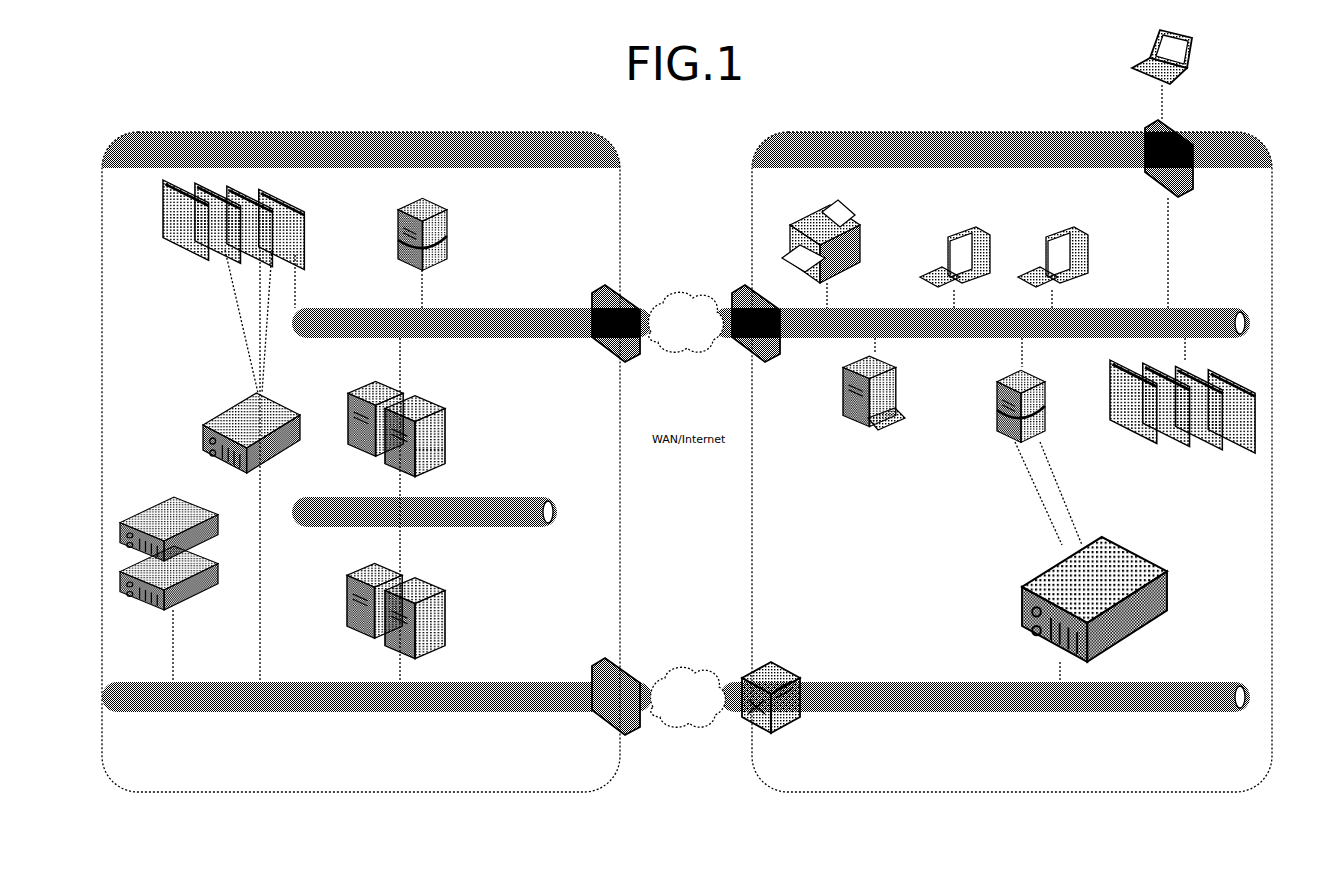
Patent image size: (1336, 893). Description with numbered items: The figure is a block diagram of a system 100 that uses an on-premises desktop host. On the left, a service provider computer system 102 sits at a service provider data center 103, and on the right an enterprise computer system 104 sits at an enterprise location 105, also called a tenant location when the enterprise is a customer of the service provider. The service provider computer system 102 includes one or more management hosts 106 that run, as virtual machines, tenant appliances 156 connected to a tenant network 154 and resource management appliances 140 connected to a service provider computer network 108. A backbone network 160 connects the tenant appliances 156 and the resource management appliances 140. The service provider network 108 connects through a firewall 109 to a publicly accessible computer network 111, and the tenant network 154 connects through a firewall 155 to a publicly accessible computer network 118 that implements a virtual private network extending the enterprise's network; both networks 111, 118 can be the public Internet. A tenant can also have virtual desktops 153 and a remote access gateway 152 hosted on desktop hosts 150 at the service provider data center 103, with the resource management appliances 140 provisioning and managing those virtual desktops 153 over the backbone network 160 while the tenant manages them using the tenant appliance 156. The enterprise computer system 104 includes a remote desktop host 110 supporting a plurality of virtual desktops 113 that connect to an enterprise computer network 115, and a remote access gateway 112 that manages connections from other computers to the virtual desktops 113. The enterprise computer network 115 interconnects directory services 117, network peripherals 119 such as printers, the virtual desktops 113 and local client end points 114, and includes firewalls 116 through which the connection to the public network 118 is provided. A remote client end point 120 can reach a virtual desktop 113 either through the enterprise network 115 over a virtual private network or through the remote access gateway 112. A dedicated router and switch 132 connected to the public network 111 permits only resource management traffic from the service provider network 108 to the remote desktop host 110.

The system 100 is at (770, 97).
The service provider computer system 102 is at (361, 462).
The service provider data center 103 is at (328, 152).
The enterprise computer system 104 is at (1012, 462).
The enterprise location 105 is at (985, 152).
The management hosts 106 is at (122, 472).
The service provider computer network 108 is at (285, 682).
The firewall 109 is at (625, 662).
The remote desktop host 110 is at (1140, 567).
The publicly accessible computer network 111 is at (690, 670).
The remote access gateway 112 is at (1047, 402).
The virtual desktops 113 is at (1225, 372).
The local client end points 114 is at (1065, 227).
The enterprise computer network 115 is at (1198, 308).
The firewalls 116 is at (768, 310).
The directory services 117 is at (903, 392).
The publicly accessible computer network 118 is at (690, 300).
The network peripherals 119 is at (860, 250).
The remote client end point 120 is at (1172, 48).
The router and switch 132 is at (786, 665).
The resource management appliances 140 is at (445, 577).
The desktop hosts 150 is at (295, 412).
The remote access gateway 152 is at (500, 227).
The virtual desktops 153 is at (305, 250).
The tenant network 154 is at (505, 309).
The firewall 155 is at (630, 300).
The tenant appliances 156 is at (448, 435).
The backbone network 160 is at (552, 503).